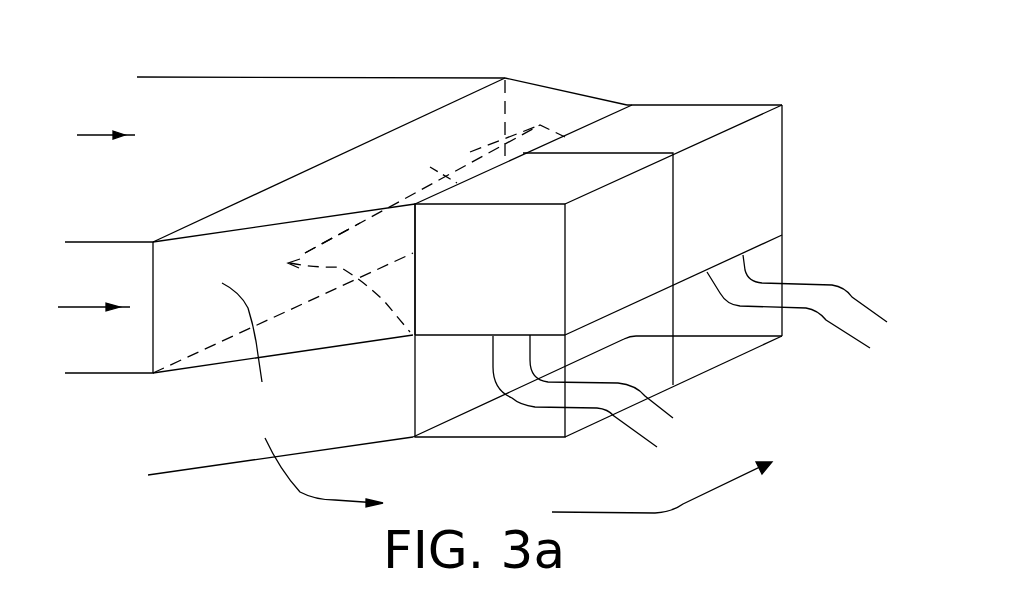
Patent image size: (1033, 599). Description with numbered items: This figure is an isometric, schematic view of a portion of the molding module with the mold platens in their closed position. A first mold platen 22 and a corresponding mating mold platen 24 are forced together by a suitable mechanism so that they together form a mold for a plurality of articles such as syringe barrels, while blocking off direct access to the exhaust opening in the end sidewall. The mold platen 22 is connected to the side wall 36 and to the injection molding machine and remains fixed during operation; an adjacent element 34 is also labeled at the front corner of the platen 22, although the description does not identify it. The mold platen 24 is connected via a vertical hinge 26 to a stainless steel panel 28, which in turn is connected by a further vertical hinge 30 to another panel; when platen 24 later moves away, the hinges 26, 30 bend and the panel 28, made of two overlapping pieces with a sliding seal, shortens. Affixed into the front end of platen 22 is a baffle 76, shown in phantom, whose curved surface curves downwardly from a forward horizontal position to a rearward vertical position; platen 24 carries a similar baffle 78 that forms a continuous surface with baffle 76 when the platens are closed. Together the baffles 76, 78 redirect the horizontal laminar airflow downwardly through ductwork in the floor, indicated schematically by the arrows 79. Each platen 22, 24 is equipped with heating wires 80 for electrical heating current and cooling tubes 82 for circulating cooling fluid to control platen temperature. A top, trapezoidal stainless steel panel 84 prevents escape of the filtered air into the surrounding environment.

The first mold platen 22 is at (493, 330).
The mating mold platen 24 is at (647, 131).
The vertical hinge 26 is at (627, 106).
The stainless steel panel 28 is at (605, 97).
The vertical hinge 30 is at (505, 105).
The front edge 34 is at (415, 204).
The side wall 36 is at (187, 370).
The baffle 76 is at (357, 243).
The baffle 78 is at (522, 130).
The arrows 79 is at (247, 355).
The heating wires 80 is at (633, 433).
The cooling tubes 82 is at (663, 415).
The top trapezoidal stainless steel panel 84 is at (347, 172).